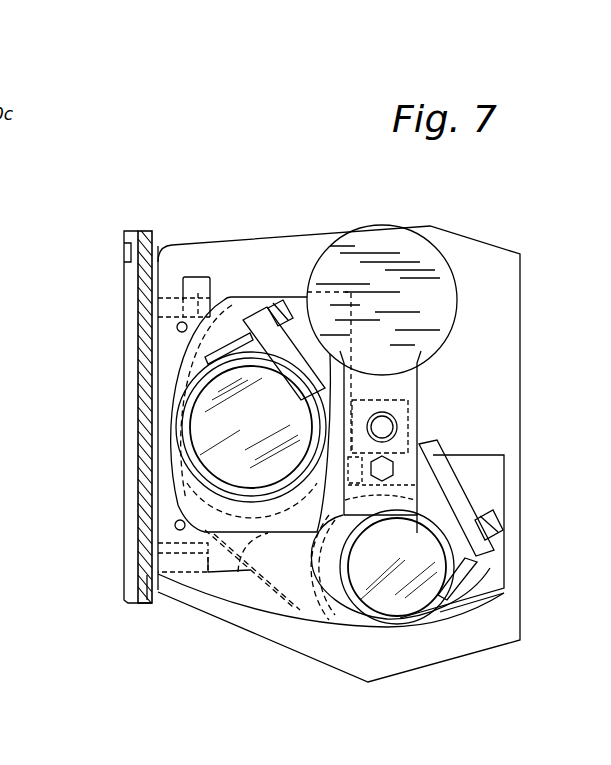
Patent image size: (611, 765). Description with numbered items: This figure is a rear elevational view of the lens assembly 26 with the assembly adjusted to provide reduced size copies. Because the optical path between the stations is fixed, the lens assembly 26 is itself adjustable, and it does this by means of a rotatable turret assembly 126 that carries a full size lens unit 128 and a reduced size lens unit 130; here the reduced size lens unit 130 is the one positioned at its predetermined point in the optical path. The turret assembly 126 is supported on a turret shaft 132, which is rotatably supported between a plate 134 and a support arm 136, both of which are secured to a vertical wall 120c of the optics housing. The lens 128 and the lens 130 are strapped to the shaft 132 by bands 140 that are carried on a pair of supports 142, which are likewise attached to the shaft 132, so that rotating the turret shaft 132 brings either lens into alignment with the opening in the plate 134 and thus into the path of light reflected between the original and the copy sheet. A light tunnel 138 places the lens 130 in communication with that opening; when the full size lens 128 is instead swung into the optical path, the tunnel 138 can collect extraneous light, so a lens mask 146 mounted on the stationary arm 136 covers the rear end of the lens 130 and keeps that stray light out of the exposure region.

The lens assembly 26 is at (240, 206).
The vertical wall 120c is at (143, 271).
The rotatable turret assembly 126 is at (516, 472).
The full size lens unit 128 is at (412, 598).
The reduced size lens unit 130 is at (212, 407).
The turret shaft 132 is at (389, 425).
The plate 134 is at (510, 612).
The support arm 136 is at (221, 594).
The light tunnel 138 is at (496, 573).
The bands 140 is at (212, 494).
The supports 142 is at (330, 364).
The lens mask 146 is at (416, 246).